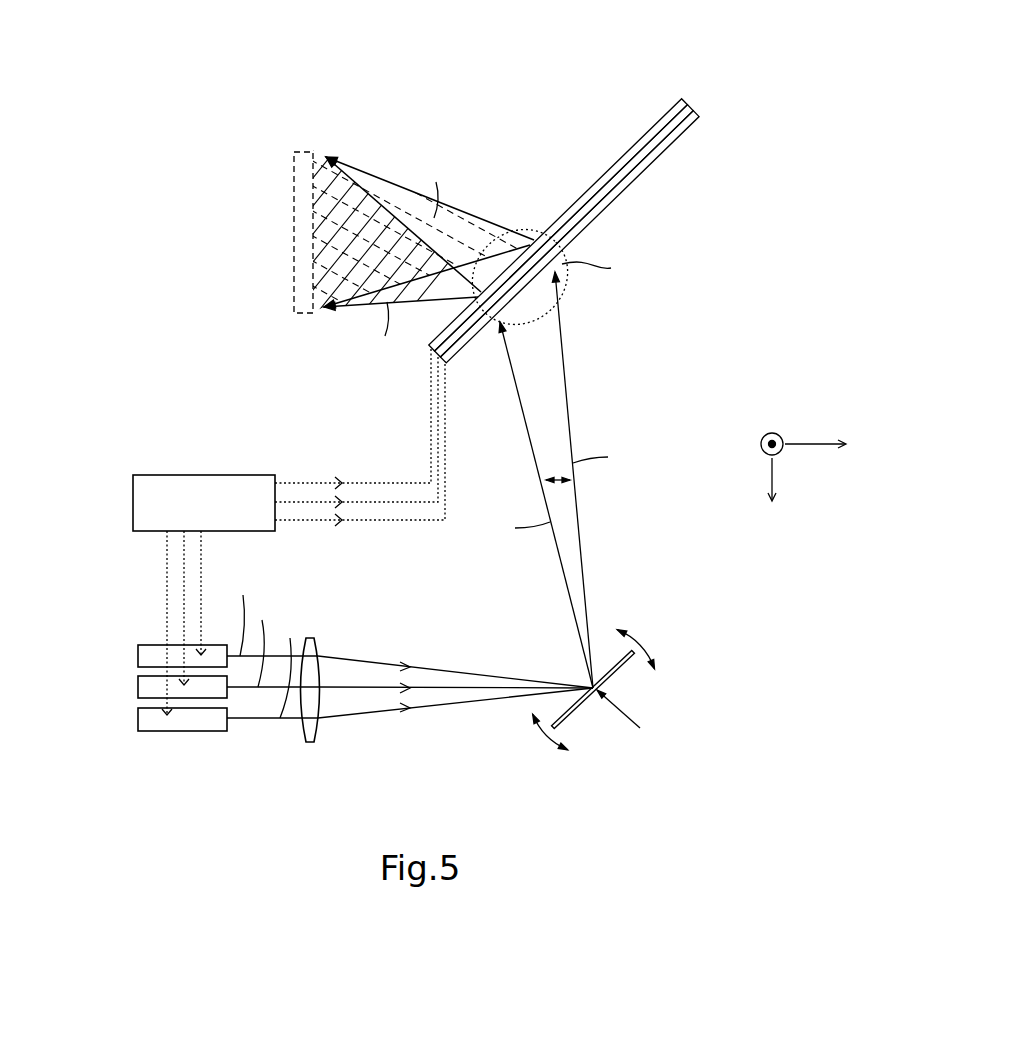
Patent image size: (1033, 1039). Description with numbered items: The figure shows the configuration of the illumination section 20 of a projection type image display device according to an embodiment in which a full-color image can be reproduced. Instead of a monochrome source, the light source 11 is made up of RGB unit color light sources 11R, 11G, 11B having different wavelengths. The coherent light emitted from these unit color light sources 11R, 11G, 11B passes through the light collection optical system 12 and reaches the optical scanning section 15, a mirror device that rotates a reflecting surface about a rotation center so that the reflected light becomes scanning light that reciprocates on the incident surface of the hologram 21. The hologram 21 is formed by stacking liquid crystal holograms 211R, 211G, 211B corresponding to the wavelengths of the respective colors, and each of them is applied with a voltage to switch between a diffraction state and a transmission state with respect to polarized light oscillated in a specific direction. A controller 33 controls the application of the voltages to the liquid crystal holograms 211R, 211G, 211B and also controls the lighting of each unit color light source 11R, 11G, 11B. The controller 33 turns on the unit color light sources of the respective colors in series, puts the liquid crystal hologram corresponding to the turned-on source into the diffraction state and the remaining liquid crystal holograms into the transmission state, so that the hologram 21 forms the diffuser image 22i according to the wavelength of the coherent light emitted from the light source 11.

The illumination section 20 is at (489, 86).
The hologram 21 is at (700, 40).
The liquid crystal hologram 211R is at (683, 97).
The liquid crystal hologram 211G is at (692, 105).
The liquid crystal hologram 211B is at (700, 116).
The diffuser image 22i is at (300, 318).
The controller 33 is at (289, 532).
The light source 11 is at (67, 640).
The unit color light source 11R is at (138, 658).
The unit color light source 11G is at (138, 689).
The unit color light source 11B is at (138, 720).
The light collection optical system 12 is at (315, 742).
The optical scanning section 15 is at (570, 717).